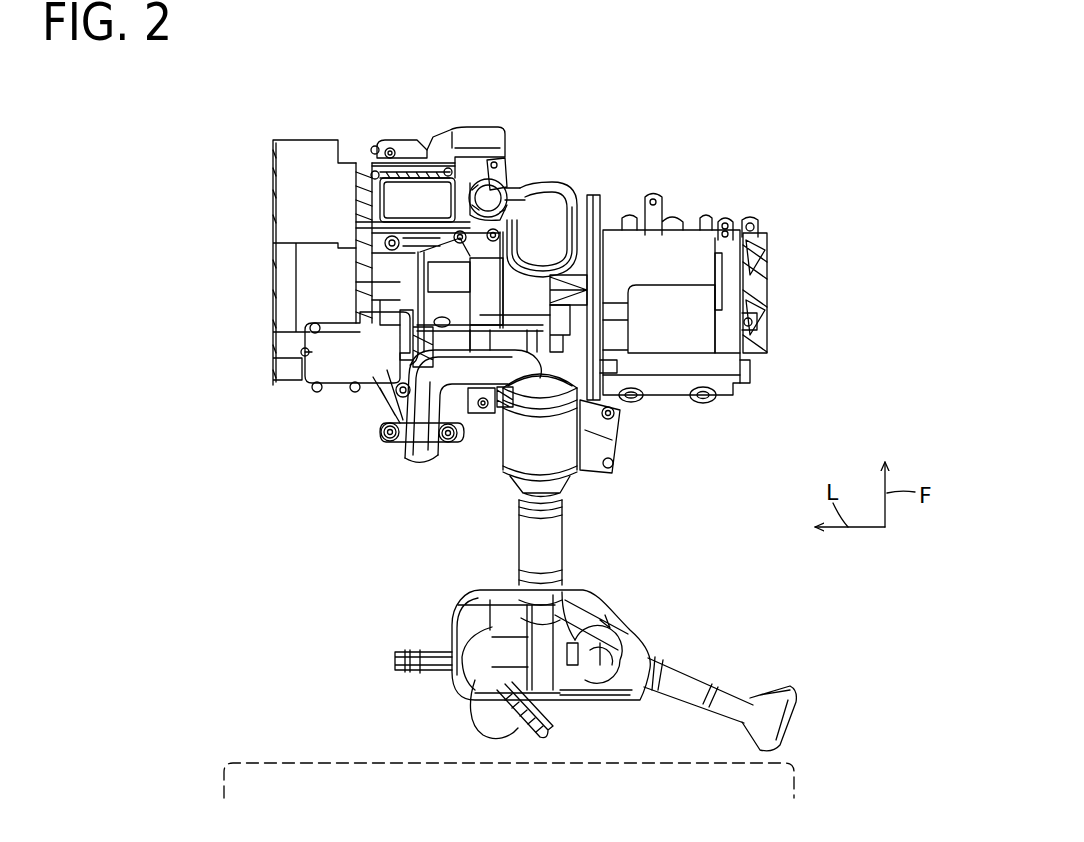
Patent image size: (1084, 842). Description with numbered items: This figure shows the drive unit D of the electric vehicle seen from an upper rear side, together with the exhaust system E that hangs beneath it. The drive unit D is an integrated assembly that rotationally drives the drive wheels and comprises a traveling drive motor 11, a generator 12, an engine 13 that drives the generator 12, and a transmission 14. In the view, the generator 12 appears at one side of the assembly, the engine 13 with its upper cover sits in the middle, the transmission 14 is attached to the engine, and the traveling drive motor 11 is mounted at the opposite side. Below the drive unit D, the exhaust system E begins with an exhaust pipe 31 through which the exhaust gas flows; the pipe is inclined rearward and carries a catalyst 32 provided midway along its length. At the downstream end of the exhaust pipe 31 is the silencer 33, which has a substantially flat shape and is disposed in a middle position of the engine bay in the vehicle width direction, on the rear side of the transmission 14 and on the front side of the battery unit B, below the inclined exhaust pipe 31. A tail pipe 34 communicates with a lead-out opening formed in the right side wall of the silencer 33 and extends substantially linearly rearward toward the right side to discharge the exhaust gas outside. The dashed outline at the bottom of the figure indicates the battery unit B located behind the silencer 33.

The traveling drive motor 11 is at (689, 225).
The generator 12 is at (303, 140).
The engine 13 is at (433, 140).
The transmission 14 is at (572, 203).
The exhaust pipe 31 is at (403, 440).
The catalyst 32 is at (505, 443).
The silencer 33 is at (607, 612).
The tail pipe 34 is at (691, 670).
The drive unit D is at (657, 140).
The exhaust system E is at (627, 517).
The battery unit B is at (800, 778).